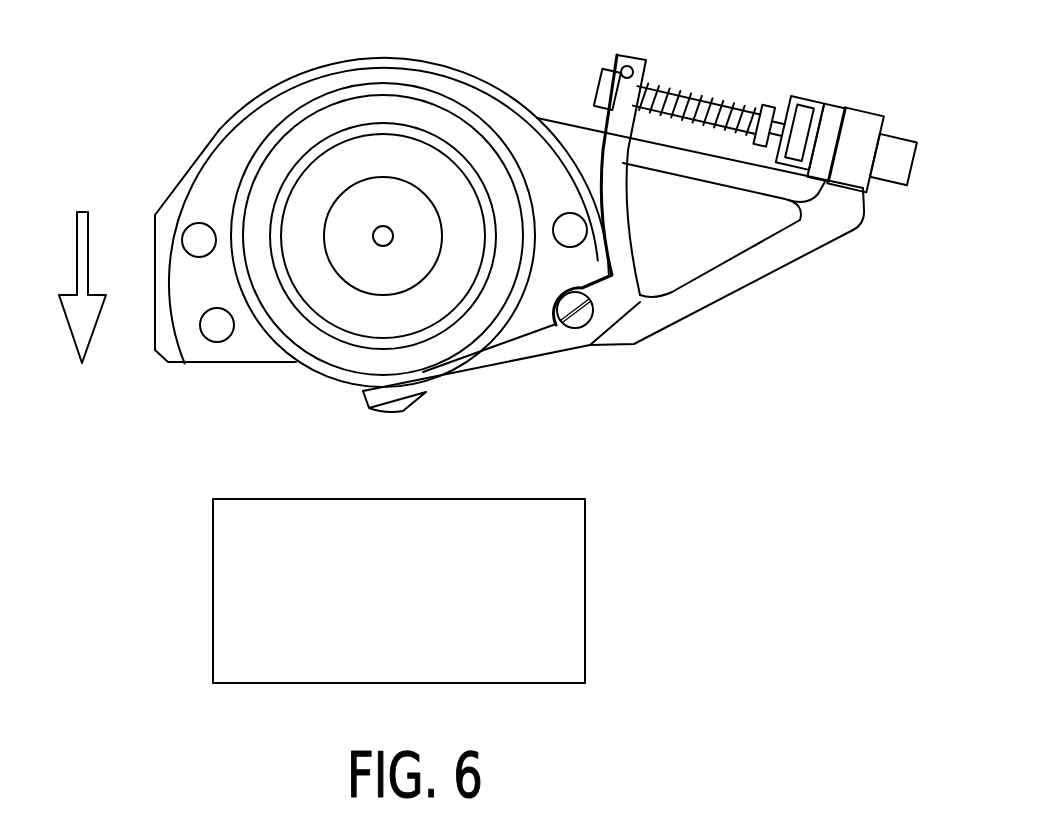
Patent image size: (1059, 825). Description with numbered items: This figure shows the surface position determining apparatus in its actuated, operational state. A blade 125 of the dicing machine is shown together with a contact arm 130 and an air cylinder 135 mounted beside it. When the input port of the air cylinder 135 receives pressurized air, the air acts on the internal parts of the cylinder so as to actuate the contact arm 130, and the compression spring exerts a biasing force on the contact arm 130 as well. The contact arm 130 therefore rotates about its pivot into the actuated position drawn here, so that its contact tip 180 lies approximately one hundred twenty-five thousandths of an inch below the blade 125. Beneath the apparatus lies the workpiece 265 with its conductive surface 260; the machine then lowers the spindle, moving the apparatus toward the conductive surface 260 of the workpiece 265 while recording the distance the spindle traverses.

The blade 125 is at (303, 370).
The contact arm 130 is at (640, 302).
The air cylinder 135 is at (728, 86).
The contact tip 180 is at (405, 410).
The conductive surface 260 is at (547, 499).
The workpiece 265 is at (585, 560).